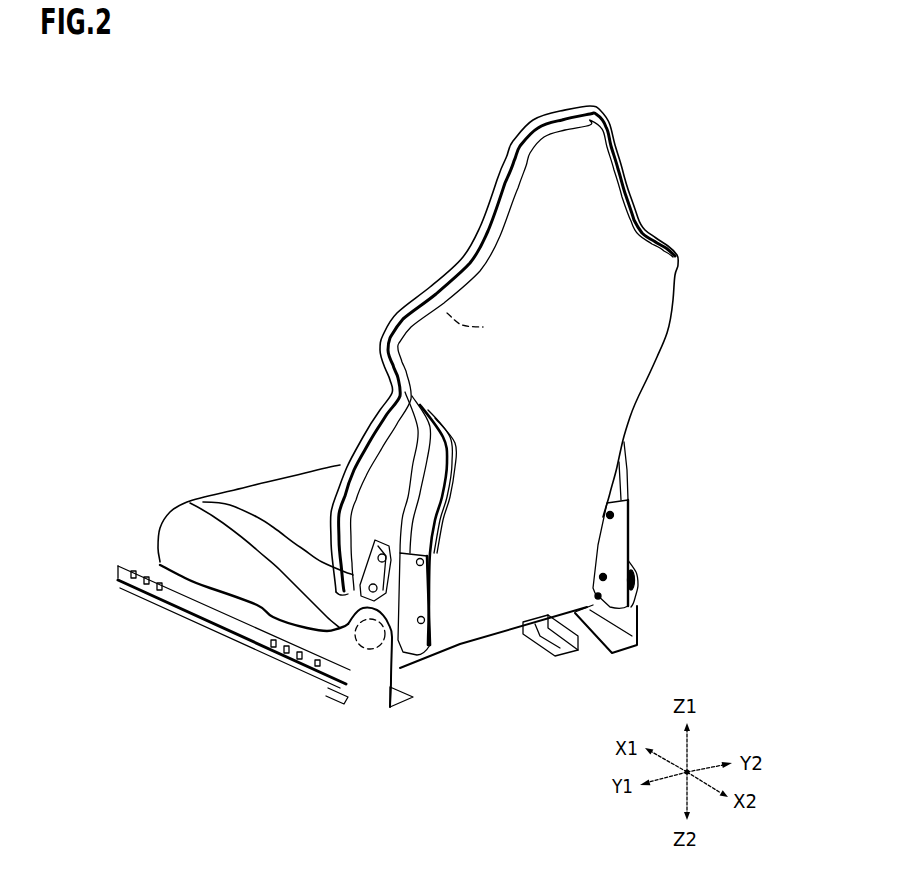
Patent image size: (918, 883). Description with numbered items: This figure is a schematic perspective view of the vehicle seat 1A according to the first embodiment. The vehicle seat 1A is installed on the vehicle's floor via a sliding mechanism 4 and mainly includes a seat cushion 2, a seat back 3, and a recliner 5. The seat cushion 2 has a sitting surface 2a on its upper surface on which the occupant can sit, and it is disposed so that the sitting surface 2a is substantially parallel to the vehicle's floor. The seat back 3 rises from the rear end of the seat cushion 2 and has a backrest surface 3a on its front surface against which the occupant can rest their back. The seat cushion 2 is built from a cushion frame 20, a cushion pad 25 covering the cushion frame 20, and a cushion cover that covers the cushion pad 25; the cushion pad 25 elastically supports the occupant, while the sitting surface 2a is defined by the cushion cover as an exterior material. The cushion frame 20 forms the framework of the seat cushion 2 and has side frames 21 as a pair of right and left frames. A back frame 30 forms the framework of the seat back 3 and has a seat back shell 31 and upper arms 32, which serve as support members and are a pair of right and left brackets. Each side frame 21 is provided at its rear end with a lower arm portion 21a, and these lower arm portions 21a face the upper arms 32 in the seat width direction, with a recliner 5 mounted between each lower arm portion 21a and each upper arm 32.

The vehicle seat 1A is at (147, 106).
The seat cushion 2 is at (167, 469).
The sitting surface 2a is at (297, 493).
The seat back 3 is at (468, 148).
The backrest surface 3a is at (447, 313).
The sliding mechanism 4 is at (180, 597).
The recliner 5 is at (630, 595).
The cushion frame 20 is at (511, 675).
The side frames 21 is at (620, 620).
The lower arm portion 21a is at (634, 575).
The cushion pad 25 is at (263, 582).
The back frame 30 is at (556, 438).
The seat back shell 31 is at (605, 348).
The upper arms 32 is at (612, 543).